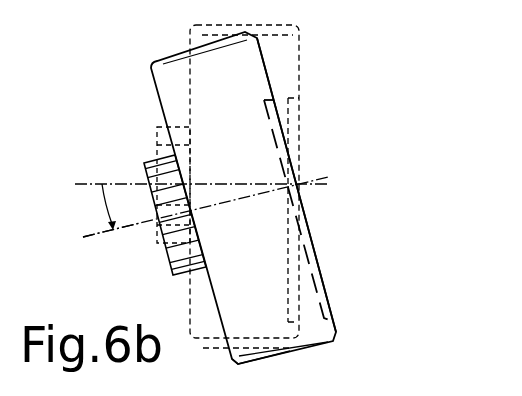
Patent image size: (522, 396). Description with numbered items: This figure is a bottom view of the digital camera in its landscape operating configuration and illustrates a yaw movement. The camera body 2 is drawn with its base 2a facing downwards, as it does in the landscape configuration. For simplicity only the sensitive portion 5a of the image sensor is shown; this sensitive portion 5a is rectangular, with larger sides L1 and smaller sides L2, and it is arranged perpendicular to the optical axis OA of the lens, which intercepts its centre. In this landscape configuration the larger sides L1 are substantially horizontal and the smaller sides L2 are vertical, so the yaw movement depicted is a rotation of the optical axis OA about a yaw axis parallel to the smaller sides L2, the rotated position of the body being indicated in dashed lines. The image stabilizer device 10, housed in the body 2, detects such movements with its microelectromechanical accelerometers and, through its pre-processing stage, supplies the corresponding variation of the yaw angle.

The body 2 is at (178, 46).
The base 2a is at (232, 316).
The sensitive portion 5a is at (310, 232).
The image stabilizer device 10 is at (333, 300).
The larger sides L1 is at (312, 242).
The smaller sides L2 is at (263, 97).
The optical axis OA is at (117, 243).